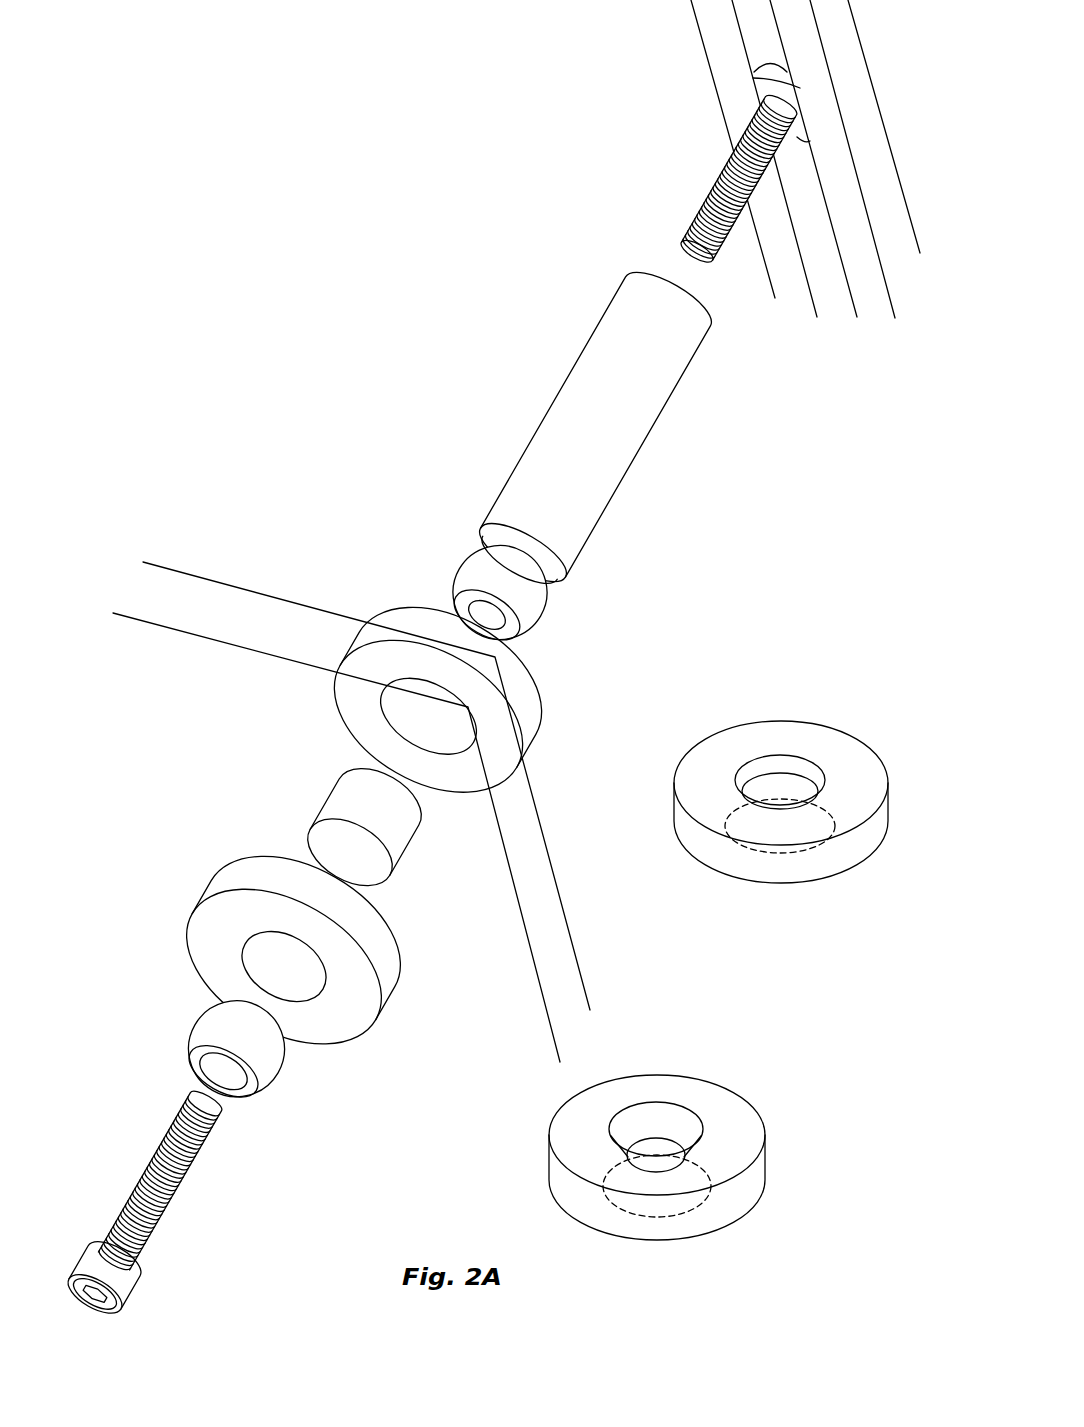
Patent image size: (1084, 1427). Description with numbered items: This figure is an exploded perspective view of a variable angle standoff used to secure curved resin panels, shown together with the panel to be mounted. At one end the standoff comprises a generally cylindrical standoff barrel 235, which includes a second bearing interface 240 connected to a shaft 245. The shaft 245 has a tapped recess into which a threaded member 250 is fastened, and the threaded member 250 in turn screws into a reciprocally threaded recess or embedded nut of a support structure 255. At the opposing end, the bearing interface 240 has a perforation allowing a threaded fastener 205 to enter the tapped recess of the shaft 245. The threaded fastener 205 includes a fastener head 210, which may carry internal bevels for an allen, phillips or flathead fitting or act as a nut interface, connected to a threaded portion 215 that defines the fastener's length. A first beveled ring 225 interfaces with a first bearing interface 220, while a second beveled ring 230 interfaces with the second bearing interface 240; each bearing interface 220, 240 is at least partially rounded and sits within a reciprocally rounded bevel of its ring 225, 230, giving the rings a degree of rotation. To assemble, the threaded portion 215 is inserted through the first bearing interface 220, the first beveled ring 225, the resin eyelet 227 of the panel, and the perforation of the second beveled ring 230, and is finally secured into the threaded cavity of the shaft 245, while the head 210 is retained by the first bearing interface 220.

The threaded fastener 205 is at (163, 1211).
The fastener head 210 is at (125, 1287).
The threaded portion 215 is at (187, 1182).
The first bearing interface 220 is at (213, 1030).
The first beveled ring 225 is at (398, 978).
The panel eyelet 227 is at (313, 842).
The second beveled ring 230 is at (717, 780).
The standoff barrel 235 is at (586, 458).
The second bearing interface 240 is at (532, 593).
The shaft 245 is at (642, 405).
The threaded member 250 is at (667, 193).
The support structure 255 is at (832, 280).